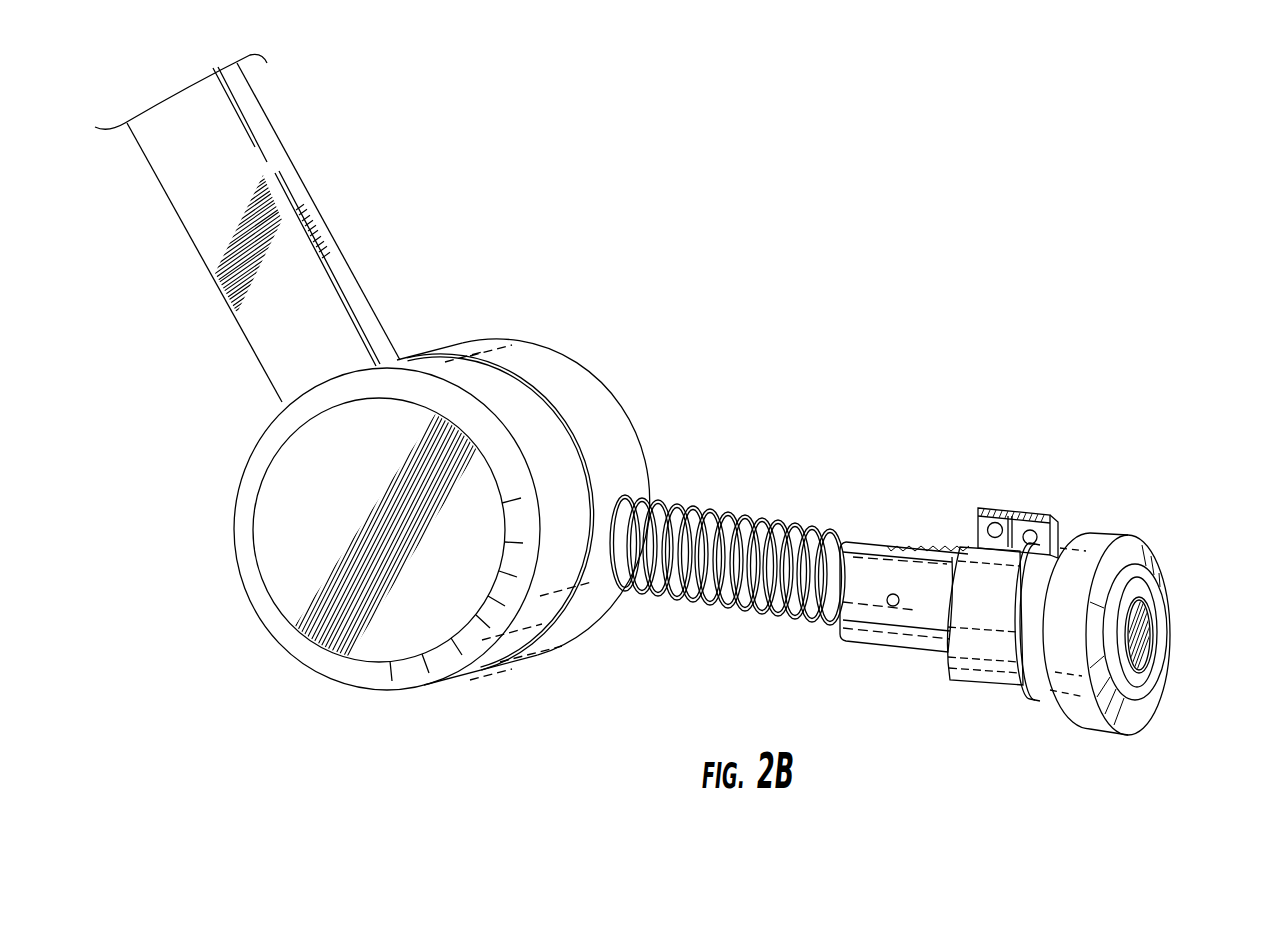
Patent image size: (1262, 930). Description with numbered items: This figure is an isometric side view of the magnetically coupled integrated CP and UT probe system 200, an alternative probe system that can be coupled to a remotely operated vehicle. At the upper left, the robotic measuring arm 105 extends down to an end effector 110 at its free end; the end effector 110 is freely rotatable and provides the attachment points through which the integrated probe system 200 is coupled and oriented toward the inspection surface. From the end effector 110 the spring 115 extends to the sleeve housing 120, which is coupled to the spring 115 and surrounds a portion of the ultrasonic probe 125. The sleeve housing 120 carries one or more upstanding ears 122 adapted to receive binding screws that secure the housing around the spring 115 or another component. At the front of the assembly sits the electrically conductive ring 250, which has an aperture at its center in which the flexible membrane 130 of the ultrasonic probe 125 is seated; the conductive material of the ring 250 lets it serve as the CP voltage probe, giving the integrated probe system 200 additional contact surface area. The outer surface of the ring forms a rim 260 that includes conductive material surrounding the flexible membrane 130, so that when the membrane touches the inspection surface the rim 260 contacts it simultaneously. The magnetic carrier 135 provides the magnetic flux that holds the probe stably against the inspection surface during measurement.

The robotic measuring arm 105 is at (307, 205).
The end effector 110 is at (597, 398).
The spring 115 is at (700, 605).
The sleeve housing 120 is at (913, 612).
The upstanding ears 122 is at (978, 517).
The ultrasonic probe 125 is at (1015, 632).
The flexible membrane 130 is at (1151, 637).
The magnetic carrier 135 is at (1033, 682).
The magnetically coupled integrated CP and UT probe system 200 is at (1055, 378).
The electrically conductive ring 250 is at (1147, 550).
The rim 260 is at (1125, 712).